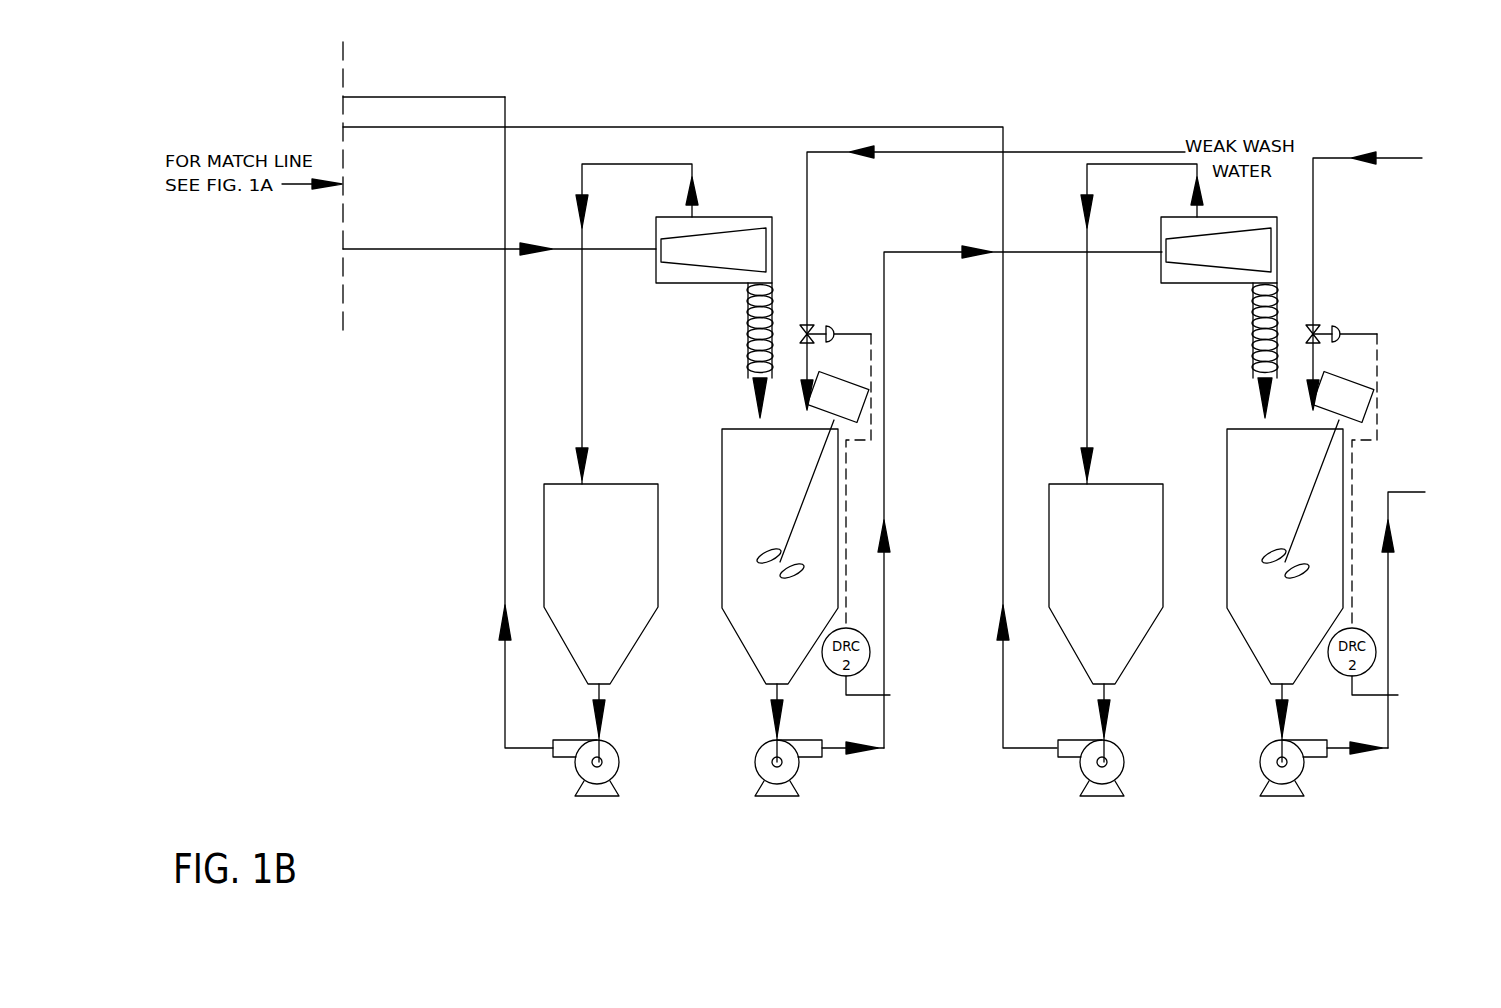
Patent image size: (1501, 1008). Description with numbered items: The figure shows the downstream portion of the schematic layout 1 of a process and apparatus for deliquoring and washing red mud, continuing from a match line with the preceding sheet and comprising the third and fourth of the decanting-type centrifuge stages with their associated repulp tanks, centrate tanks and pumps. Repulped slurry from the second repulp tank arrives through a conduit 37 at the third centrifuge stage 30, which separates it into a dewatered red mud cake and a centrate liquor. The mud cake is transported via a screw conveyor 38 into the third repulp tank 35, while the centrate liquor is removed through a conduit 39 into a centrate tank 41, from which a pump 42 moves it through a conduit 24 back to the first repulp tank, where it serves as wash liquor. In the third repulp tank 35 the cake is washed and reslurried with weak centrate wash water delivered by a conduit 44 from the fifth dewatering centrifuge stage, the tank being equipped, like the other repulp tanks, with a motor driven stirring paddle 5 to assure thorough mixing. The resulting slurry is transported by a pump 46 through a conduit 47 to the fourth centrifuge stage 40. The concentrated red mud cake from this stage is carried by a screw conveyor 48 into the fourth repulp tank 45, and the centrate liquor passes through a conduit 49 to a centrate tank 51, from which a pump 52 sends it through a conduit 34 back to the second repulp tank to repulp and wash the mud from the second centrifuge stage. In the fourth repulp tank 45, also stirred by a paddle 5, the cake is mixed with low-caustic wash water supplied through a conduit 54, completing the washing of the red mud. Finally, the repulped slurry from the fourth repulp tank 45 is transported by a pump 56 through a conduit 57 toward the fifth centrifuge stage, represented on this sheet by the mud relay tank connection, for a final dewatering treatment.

The schematic layout of the presently preferred embodiment 1 is at (392, 62).
The conduit 34 is at (626, 127).
The conduit 37 is at (448, 252).
The conduit 24 is at (503, 340).
The conduit 39 is at (579, 338).
The third centrifuge stage 30 is at (718, 215).
The screw conveyor 38 is at (750, 332).
The conduit 44 is at (1048, 152).
The motor driven stirring paddle 5 is at (818, 462).
The third repulp tank 35 is at (724, 622).
The conduit 47 is at (955, 255).
The centrate tank 41 is at (630, 487).
The pump 42 is at (597, 797).
The pump 46 is at (775, 797).
The conduit 49 is at (1085, 300).
The fourth centrifuge stage 40 is at (1283, 217).
The screw conveyor 48 is at (1254, 332).
The conduit 54 is at (1398, 158).
The fourth repulp tank 45 is at (1230, 625).
The conduit 57 is at (1390, 605).
The centrate tank 51 is at (1133, 488).
The pump 52 is at (1102, 797).
The pump 56 is at (1280, 797).